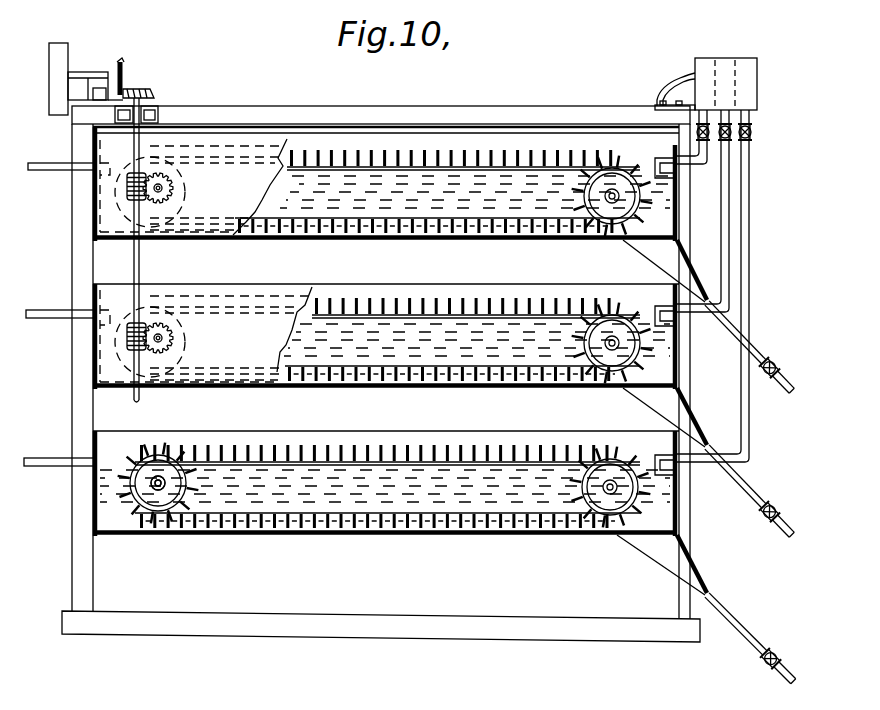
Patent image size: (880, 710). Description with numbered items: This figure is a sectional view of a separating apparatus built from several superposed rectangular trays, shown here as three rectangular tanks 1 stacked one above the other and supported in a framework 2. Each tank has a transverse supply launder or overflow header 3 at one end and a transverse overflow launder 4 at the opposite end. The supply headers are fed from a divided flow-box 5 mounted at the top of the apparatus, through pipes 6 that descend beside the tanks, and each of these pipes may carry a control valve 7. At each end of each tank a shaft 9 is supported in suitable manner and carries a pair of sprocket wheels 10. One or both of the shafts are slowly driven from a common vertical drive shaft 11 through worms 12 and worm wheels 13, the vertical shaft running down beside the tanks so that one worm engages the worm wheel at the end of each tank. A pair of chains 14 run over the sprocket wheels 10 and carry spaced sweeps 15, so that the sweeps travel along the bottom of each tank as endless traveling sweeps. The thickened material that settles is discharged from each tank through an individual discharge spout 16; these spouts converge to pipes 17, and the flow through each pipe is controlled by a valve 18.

The rectangular tank 1 is at (325, 242).
The framework 2 is at (80, 390).
The supply launder 3 is at (665, 163).
The overflow launder 4 is at (155, 488).
The divided flow-box 5 is at (723, 72).
The pipe 6 is at (750, 163).
The control valve 7 is at (753, 132).
The shaft 9 is at (158, 490).
The sprocket wheel 10 is at (170, 497).
The vertical drive shaft 11 is at (141, 263).
The worm 12 is at (131, 192).
The worm wheel 13 is at (165, 188).
The chain 14 is at (397, 165).
The sweep 15 is at (447, 155).
The discharge spout 16 is at (662, 398).
The pipe 17 is at (735, 480).
The valve 18 is at (766, 520).